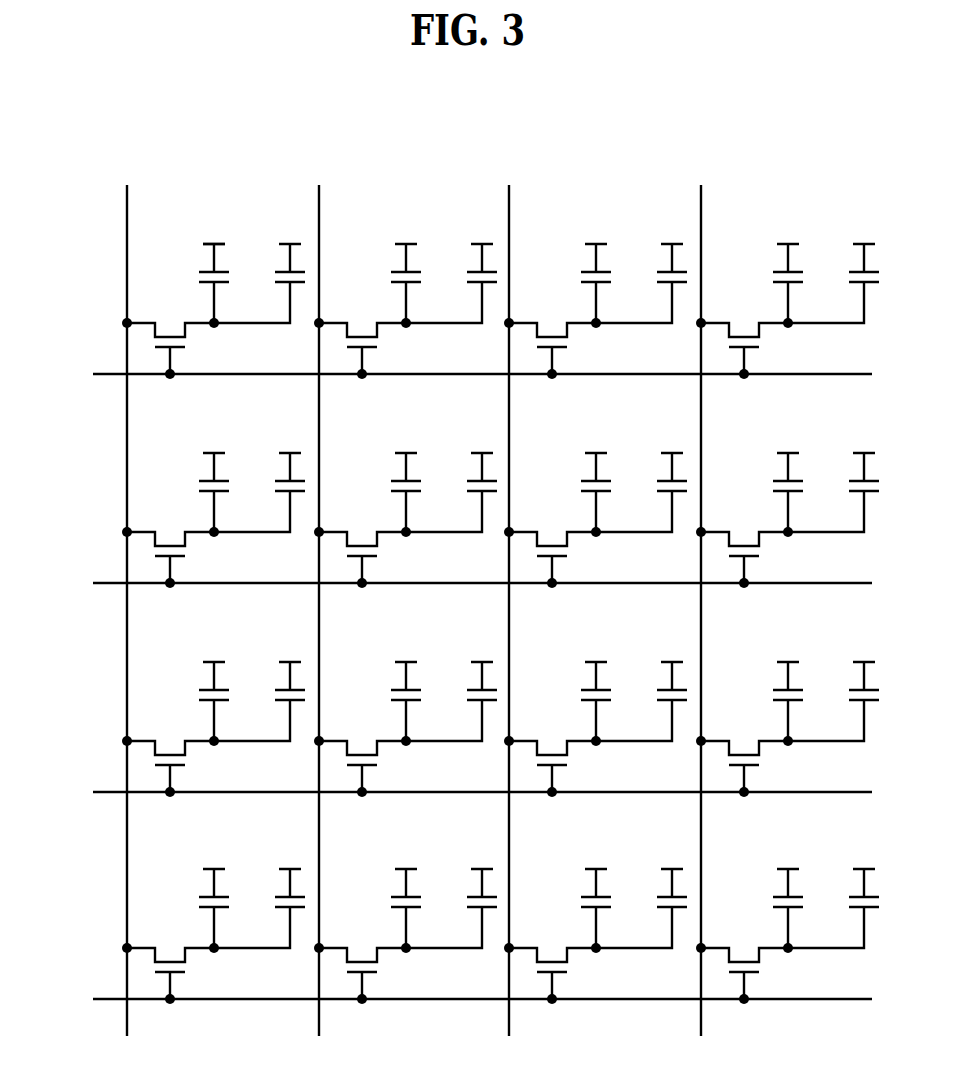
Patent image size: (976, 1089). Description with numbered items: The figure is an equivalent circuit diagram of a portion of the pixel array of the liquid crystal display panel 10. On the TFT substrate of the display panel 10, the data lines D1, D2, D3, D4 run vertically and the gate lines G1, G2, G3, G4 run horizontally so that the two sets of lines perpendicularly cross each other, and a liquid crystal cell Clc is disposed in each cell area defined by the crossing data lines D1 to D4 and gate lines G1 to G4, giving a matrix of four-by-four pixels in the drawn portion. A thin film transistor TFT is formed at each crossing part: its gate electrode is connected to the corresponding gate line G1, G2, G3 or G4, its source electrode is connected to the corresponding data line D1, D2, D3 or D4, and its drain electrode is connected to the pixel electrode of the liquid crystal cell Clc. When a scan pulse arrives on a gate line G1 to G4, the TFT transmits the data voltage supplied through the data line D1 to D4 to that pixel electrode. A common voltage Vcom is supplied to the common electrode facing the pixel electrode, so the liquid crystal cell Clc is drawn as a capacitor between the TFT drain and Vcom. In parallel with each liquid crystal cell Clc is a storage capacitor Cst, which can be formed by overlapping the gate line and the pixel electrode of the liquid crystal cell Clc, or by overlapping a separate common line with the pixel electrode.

The display panel 10 is at (104, 132).
The data line D1 is at (131, 595).
The data line D2 is at (322, 595).
The data line D3 is at (513, 595).
The data line D4 is at (704, 595).
The gate line G1 is at (464, 375).
The gate line G2 is at (464, 584).
The gate line G3 is at (464, 793).
The gate line G4 is at (464, 1000).
The thin film transistor TFT is at (182, 348).
The liquid crystal cell Clc is at (191, 286).
The storage capacitor Cst is at (259, 283).
The common voltage Vcom is at (223, 229).